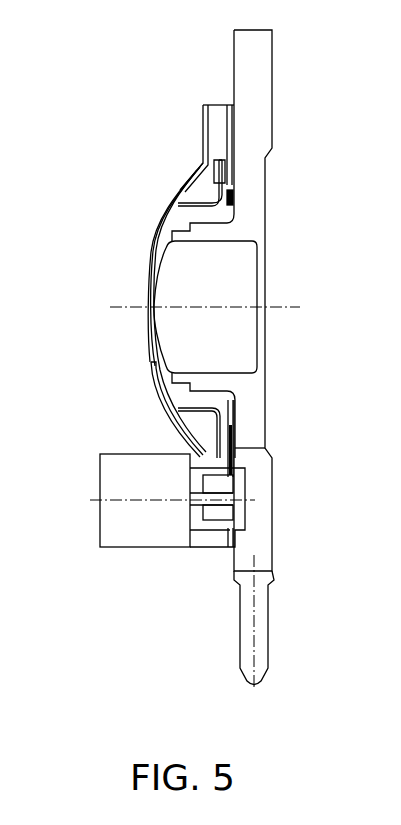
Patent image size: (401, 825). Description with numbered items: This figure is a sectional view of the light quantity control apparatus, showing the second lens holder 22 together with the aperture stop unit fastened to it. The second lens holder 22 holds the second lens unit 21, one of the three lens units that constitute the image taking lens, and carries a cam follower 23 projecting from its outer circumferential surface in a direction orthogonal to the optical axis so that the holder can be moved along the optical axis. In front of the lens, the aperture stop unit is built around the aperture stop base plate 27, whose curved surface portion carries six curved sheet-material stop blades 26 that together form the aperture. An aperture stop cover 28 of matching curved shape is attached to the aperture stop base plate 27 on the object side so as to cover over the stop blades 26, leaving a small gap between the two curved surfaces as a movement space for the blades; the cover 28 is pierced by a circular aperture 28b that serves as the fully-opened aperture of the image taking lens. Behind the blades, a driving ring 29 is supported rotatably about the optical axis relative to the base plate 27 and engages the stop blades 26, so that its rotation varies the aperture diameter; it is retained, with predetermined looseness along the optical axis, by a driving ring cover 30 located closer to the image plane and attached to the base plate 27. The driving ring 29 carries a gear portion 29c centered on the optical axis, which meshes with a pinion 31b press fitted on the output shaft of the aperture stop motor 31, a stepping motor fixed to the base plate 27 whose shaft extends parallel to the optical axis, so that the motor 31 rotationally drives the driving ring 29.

The second lens unit 21 is at (258, 330).
The second lens holder 22 is at (272, 93).
The cam follower 23 is at (254, 647).
The stop blade 26 is at (152, 340).
The aperture stop base plate 27 is at (218, 113).
The aperture stop cover 28 is at (155, 235).
The circular aperture 28b is at (153, 252).
The driving ring 29 is at (214, 208).
The gear portion 29c is at (224, 459).
The driving ring cover 30 is at (229, 102).
The aperture stop motor 31 is at (100, 532).
The pinion 31b is at (228, 485).